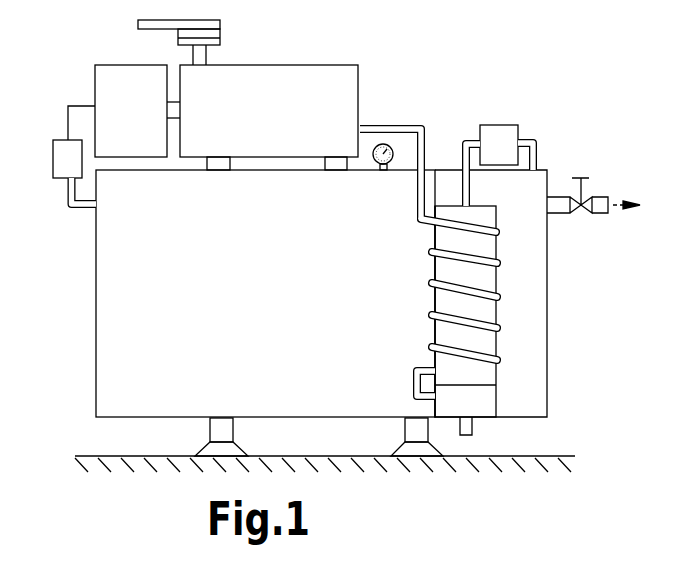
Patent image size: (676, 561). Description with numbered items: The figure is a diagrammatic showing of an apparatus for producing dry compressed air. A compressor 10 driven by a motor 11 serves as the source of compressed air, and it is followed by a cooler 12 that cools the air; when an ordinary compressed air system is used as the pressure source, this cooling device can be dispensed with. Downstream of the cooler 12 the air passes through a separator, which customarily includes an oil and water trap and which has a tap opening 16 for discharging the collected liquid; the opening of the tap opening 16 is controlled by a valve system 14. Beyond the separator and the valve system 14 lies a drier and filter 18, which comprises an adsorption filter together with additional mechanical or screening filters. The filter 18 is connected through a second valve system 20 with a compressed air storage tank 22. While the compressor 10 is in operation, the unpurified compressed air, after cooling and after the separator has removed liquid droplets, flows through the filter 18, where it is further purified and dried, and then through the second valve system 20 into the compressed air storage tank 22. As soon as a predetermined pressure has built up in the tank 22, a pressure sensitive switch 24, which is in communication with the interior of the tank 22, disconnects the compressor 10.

The compressor 10 is at (318, 87).
The motor 11 is at (120, 78).
The cooler 12 is at (492, 293).
The valve system 14 is at (485, 405).
The tap opening 16 is at (468, 432).
The drier and filter 18 is at (485, 308).
The second valve system 20 is at (497, 142).
The compressed air storage tank 22 is at (305, 296).
The pressure sensitive switch 24 is at (64, 158).